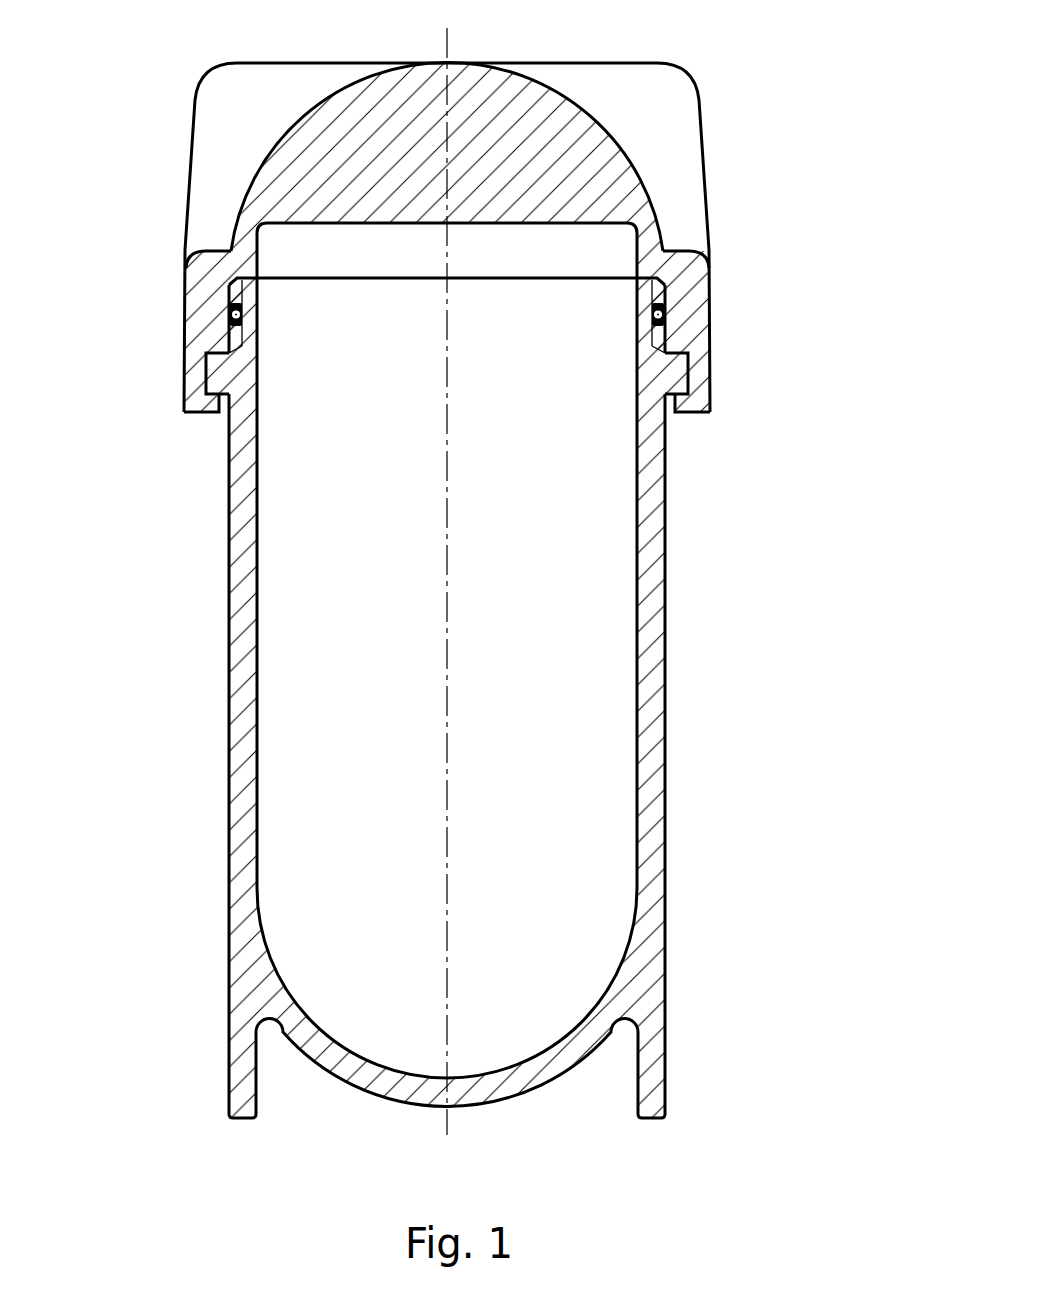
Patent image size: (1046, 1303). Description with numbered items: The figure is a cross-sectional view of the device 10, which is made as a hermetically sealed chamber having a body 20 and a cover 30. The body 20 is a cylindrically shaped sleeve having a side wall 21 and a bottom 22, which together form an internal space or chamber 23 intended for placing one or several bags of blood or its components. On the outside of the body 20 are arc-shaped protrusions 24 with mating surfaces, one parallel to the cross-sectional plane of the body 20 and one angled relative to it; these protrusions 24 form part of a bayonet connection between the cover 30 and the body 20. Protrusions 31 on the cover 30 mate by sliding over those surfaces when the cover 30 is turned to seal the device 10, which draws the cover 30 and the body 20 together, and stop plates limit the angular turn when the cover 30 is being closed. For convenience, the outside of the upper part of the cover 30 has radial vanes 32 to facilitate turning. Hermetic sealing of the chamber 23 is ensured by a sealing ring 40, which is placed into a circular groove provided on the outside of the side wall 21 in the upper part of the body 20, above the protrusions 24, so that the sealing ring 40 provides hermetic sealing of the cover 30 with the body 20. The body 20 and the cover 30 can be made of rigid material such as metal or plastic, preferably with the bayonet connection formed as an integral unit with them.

The device 10 is at (779, 204).
The body 20 is at (667, 590).
The side wall 21 is at (652, 825).
The bottom 22 is at (585, 1043).
The chamber 23 is at (583, 793).
The arc-shaped protrusions 24 is at (673, 377).
The cover 30 is at (683, 325).
The protrusions 31 is at (712, 413).
The radial vanes 32 is at (245, 103).
The sealing ring 40 is at (233, 313).